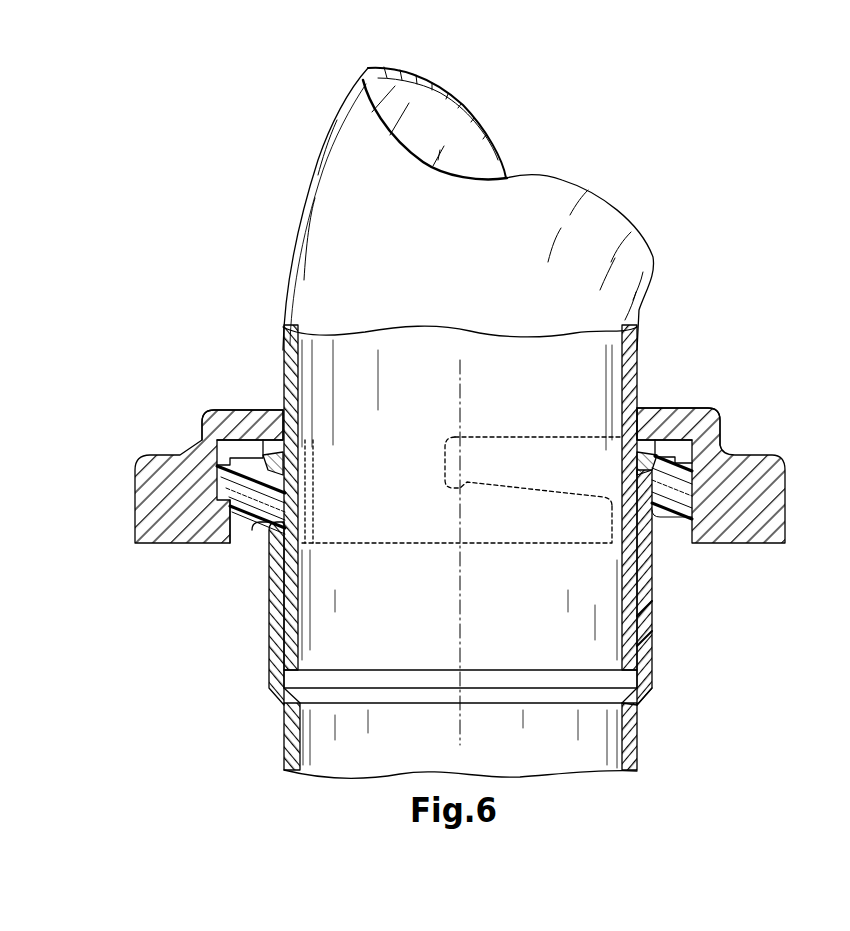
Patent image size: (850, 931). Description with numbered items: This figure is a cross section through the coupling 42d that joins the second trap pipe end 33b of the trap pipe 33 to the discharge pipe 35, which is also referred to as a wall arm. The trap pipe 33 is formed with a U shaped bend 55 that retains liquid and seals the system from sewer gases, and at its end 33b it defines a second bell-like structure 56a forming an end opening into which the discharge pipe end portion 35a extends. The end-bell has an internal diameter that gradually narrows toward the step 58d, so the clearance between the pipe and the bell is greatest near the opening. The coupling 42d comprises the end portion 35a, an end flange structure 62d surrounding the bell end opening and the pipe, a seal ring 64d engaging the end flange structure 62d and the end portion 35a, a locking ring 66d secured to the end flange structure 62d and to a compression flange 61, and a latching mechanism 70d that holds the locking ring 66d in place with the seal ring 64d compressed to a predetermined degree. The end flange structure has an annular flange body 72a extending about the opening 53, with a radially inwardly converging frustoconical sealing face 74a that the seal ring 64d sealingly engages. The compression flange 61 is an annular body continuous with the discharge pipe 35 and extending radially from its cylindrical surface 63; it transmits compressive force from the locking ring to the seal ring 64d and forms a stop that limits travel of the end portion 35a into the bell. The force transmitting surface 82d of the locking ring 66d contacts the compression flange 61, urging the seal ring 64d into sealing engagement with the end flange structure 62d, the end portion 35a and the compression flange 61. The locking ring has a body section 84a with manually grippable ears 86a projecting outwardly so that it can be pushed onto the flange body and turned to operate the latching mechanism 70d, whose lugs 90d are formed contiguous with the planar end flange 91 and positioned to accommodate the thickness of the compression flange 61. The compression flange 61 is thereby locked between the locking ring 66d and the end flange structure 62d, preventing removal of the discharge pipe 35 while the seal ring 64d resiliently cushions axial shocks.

The discharge pipe 35 is at (303, 177).
The coupling 42d is at (243, 342).
The discharge pipe end portion 35a is at (640, 590).
The U shaped bend 55 is at (287, 742).
The trap pipe 33 is at (583, 750).
The second bell-like structure 56a is at (275, 628).
The cylindrical surface 63 is at (640, 565).
The second trap pipe end 33b is at (643, 618).
The step 58d is at (643, 705).
The body section 84a is at (205, 523).
The force transmitting surface 82d is at (250, 443).
The ears 86a is at (763, 527).
The latching mechanism 70d is at (695, 473).
The latching mechanism lugs 90d is at (223, 477).
The locking ring 66d is at (204, 442).
The annular flange body 72a is at (262, 476).
The planar end flange 91 is at (660, 437).
The compression flange 61 is at (290, 450).
The seal ring 64d is at (290, 458).
The sealing face 74a is at (290, 477).
The opening 53 is at (317, 557).
The end flange structure 62d is at (242, 524).